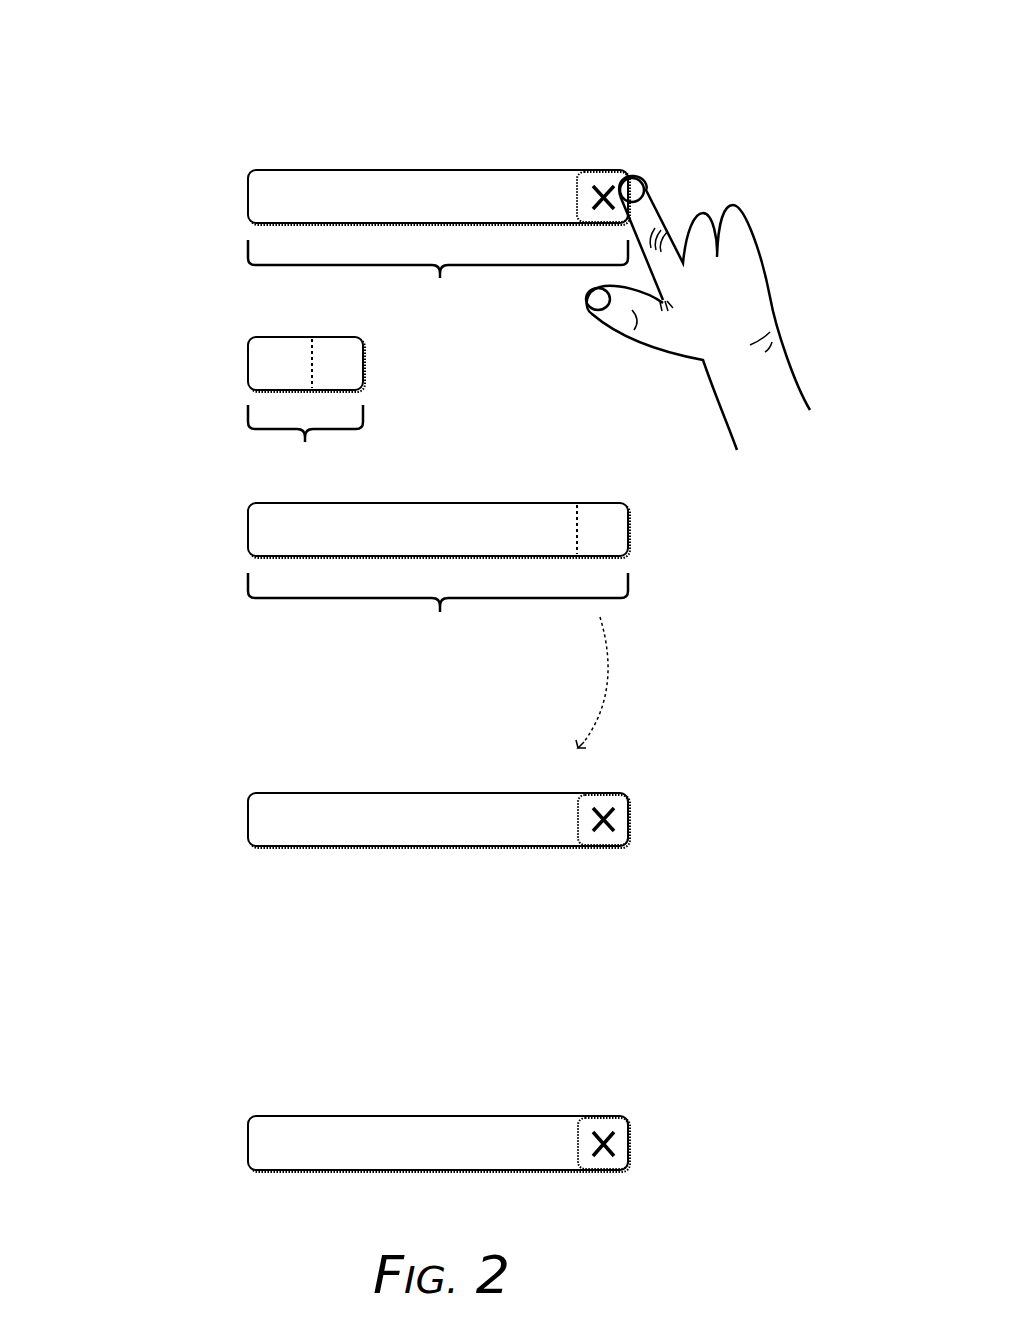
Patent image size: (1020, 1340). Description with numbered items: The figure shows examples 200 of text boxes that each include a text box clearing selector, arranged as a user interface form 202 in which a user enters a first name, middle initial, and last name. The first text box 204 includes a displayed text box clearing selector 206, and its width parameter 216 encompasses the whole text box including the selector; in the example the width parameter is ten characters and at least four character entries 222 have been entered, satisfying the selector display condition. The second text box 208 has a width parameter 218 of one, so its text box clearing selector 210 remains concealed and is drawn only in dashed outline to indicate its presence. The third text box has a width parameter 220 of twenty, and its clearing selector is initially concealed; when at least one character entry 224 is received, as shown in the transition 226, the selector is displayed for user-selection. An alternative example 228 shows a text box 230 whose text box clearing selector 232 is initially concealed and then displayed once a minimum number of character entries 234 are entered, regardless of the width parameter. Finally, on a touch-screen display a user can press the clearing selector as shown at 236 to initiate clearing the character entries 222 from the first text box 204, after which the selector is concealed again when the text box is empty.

The examples of text boxes 200 is at (726, 66).
The user interface text boxes 202 is at (534, 100).
The first text box 204 is at (300, 170).
The text box clearing selector 206 is at (604, 170).
The second text box 208 is at (300, 336).
The text box clearing selector 210 is at (366, 362).
The width parameter 216 is at (455, 308).
The width parameter 218 is at (323, 472).
The width parameter 220 is at (455, 645).
The character entries 222 is at (323, 182).
The character entry 224 is at (286, 838).
The transition 226 is at (364, 726).
The alternative example 228 is at (534, 1050).
The alternative text box 230 is at (300, 1116).
The text box clearing selector 232 is at (603, 1115).
The character entries 234 is at (354, 1128).
The user press 236 is at (688, 180).